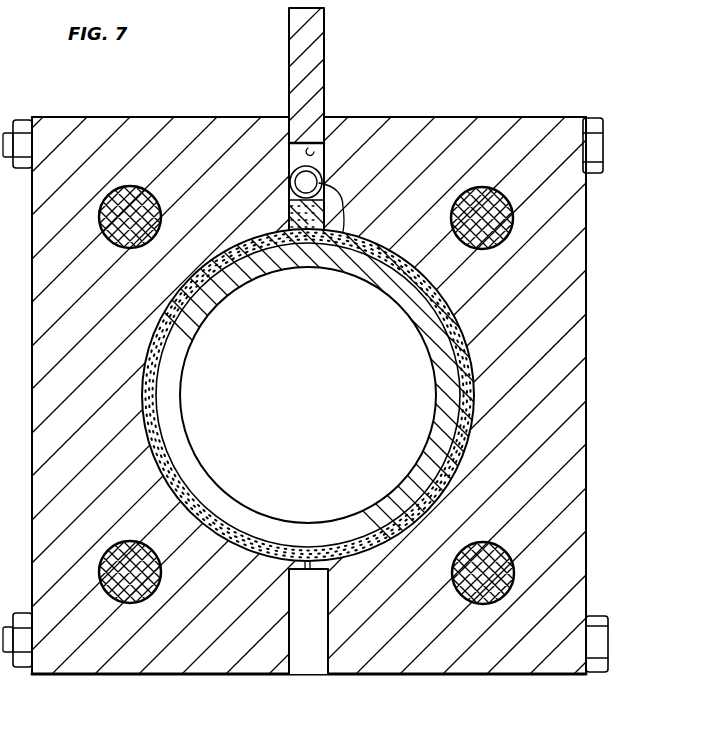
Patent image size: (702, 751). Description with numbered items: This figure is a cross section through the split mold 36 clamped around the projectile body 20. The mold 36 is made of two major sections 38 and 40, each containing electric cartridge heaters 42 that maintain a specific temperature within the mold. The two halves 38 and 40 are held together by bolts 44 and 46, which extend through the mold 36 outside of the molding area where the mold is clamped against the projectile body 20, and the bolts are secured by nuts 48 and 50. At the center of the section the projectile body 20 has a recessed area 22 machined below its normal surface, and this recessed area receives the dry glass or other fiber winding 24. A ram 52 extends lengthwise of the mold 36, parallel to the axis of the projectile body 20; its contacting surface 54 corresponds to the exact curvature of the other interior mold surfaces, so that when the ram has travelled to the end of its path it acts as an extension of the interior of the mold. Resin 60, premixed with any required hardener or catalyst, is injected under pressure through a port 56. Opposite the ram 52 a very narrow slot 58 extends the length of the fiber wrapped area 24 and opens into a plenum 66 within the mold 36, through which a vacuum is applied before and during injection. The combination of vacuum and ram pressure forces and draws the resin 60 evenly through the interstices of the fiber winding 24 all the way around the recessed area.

The projectile body 20 is at (184, 411).
The recessed area 22 is at (160, 368).
The fiber winding 24 is at (244, 532).
The split mold 36 is at (491, 92).
The mold section 38 is at (575, 393).
The mold section 40 is at (46, 361).
The electric cartridge heaters 42 is at (500, 223).
The bolt 44 is at (597, 150).
The bolt 46 is at (603, 650).
The nut 48 is at (25, 119).
The nut 50 is at (27, 668).
The ram 52 is at (317, 33).
The contacting surface 54 is at (315, 143).
The port 56 is at (335, 240).
The slot 58 is at (289, 597).
The resin 60 is at (300, 247).
The plenum 66 is at (312, 670).